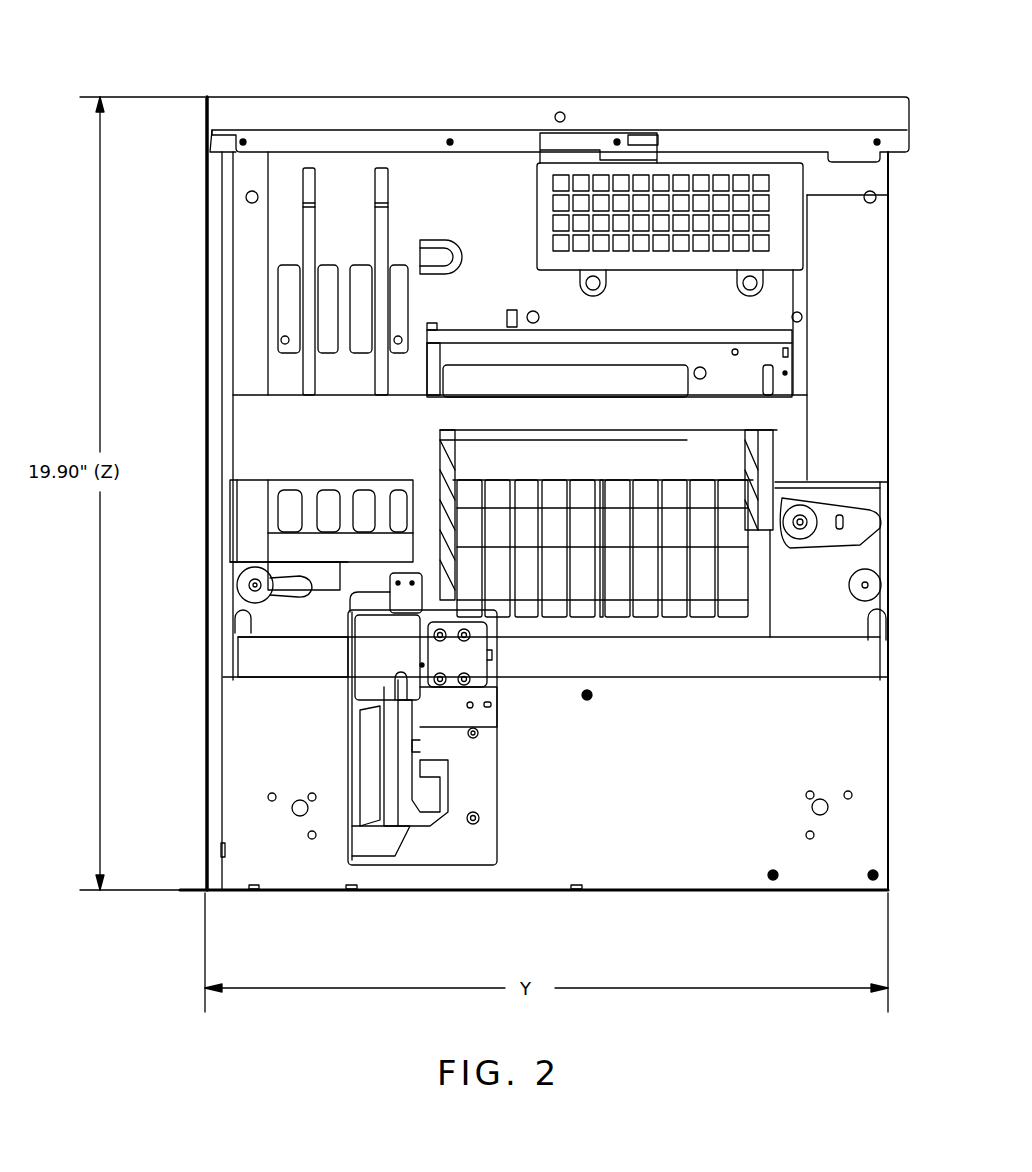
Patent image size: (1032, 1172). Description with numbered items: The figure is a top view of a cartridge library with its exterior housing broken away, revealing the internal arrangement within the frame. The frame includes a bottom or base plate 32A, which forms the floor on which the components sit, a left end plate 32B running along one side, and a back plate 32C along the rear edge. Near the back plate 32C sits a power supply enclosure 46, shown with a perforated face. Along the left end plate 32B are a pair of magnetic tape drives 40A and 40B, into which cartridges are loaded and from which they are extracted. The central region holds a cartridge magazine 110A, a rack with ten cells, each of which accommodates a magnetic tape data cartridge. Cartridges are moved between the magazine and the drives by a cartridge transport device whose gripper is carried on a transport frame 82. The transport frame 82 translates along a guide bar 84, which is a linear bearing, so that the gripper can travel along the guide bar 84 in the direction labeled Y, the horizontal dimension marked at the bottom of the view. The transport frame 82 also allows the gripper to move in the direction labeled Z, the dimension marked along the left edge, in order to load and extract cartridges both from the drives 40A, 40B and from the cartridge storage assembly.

The base plate 32A is at (692, 808).
The left end plate 32B is at (207, 744).
The back plate 32C is at (494, 97).
The power supply enclosure 46 is at (777, 160).
The magnetic tape drive 40A is at (255, 585).
The magnetic tape drive 40B is at (385, 573).
The transport frame 82 is at (433, 865).
The guide bar 84 is at (787, 658).
The cartridge magazine 110A is at (680, 620).